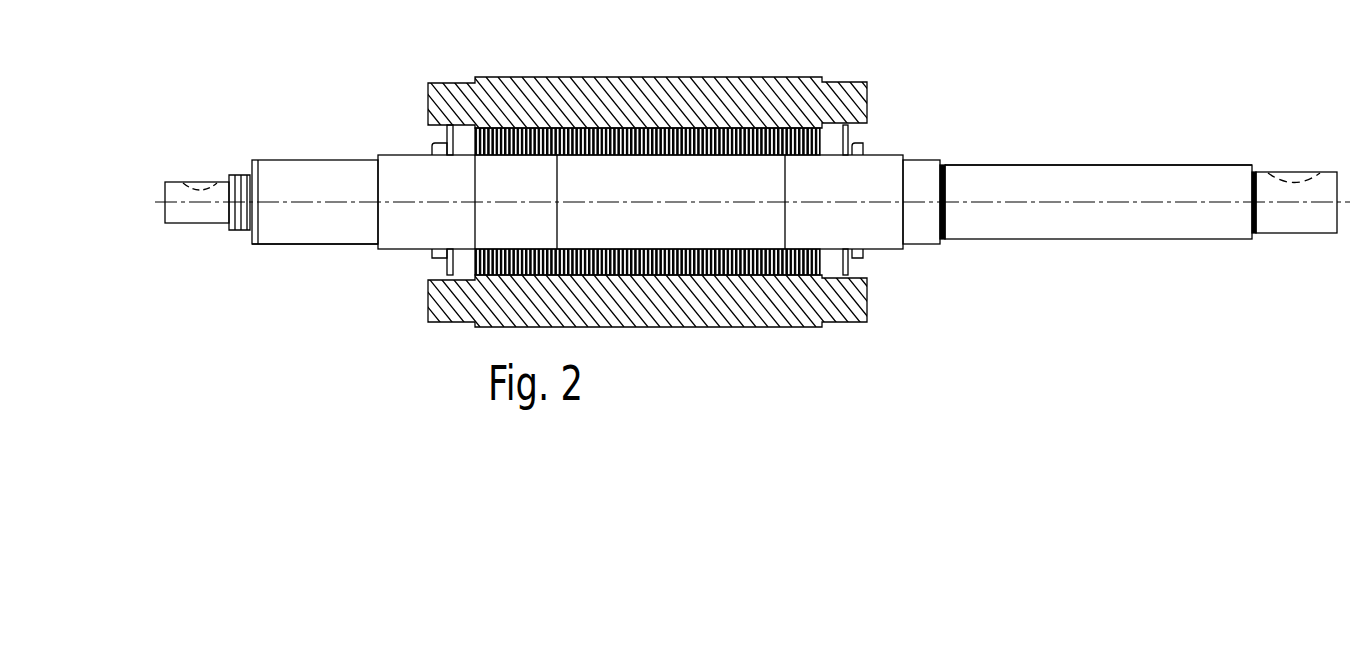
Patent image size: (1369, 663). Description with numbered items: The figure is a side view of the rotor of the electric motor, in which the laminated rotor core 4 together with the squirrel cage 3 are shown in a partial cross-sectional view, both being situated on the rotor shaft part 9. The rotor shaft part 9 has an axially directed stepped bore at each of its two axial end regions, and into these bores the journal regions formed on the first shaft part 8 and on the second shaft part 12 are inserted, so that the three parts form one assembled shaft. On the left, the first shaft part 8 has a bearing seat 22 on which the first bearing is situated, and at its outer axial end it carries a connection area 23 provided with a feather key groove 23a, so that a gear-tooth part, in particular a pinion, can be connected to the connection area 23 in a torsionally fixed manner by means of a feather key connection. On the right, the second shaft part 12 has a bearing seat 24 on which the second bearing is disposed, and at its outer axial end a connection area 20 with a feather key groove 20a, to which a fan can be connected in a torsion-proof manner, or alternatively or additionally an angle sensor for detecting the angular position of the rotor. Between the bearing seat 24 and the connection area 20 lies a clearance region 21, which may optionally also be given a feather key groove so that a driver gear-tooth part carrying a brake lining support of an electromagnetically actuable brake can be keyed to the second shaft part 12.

The squirrel cage 3 is at (653, 97).
The laminated rotor core 4 is at (727, 145).
The first shaft part 8 is at (313, 183).
The rotor shaft part 9 is at (655, 228).
The second shaft part 12 is at (1008, 183).
The connection area 20 is at (1308, 234).
The feather key groove 20a is at (1297, 172).
The clearance region 21 is at (1187, 164).
The bearing seat 22 is at (345, 249).
The connection area 23 is at (210, 226).
The feather key groove 23a is at (198, 182).
The bearing seat 24 is at (927, 158).